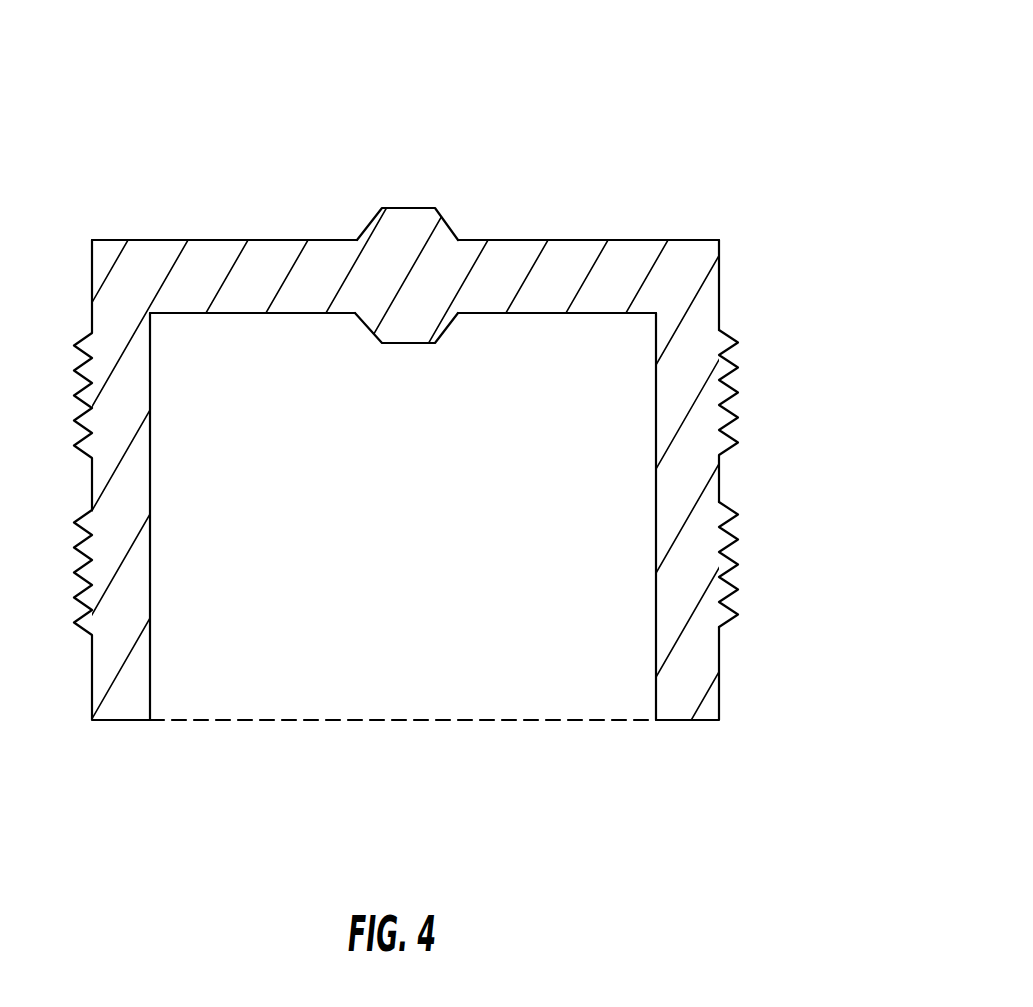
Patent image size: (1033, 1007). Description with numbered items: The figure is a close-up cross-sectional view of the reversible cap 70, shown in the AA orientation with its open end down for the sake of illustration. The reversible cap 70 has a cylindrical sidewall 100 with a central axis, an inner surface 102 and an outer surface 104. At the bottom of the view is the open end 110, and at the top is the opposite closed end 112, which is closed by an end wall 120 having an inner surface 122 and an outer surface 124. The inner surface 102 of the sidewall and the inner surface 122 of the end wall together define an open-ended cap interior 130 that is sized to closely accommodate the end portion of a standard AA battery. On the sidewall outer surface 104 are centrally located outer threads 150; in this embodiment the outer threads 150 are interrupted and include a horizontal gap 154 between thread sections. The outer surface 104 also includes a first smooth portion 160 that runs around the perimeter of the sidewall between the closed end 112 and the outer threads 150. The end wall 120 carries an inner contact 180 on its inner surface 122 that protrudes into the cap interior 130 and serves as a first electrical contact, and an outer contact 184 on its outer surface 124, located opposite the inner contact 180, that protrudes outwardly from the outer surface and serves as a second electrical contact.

The reversible cap 70 is at (700, 87).
The cylindrical sidewall 100 is at (687, 705).
The inner surface 102 is at (150, 595).
The outer surface 104 is at (760, 591).
The open end 110 is at (542, 766).
The closed end 112 is at (206, 139).
The end wall 120 is at (143, 205).
The inner surface 122 is at (192, 313).
The outer surface 124 is at (598, 240).
The cap interior 130 is at (452, 499).
The outer threads 150 is at (857, 330).
The horizontal gap 154 is at (719, 490).
The first smooth portion 160 is at (719, 302).
The inner contact 180 is at (408, 343).
The outer contact 184 is at (393, 207).